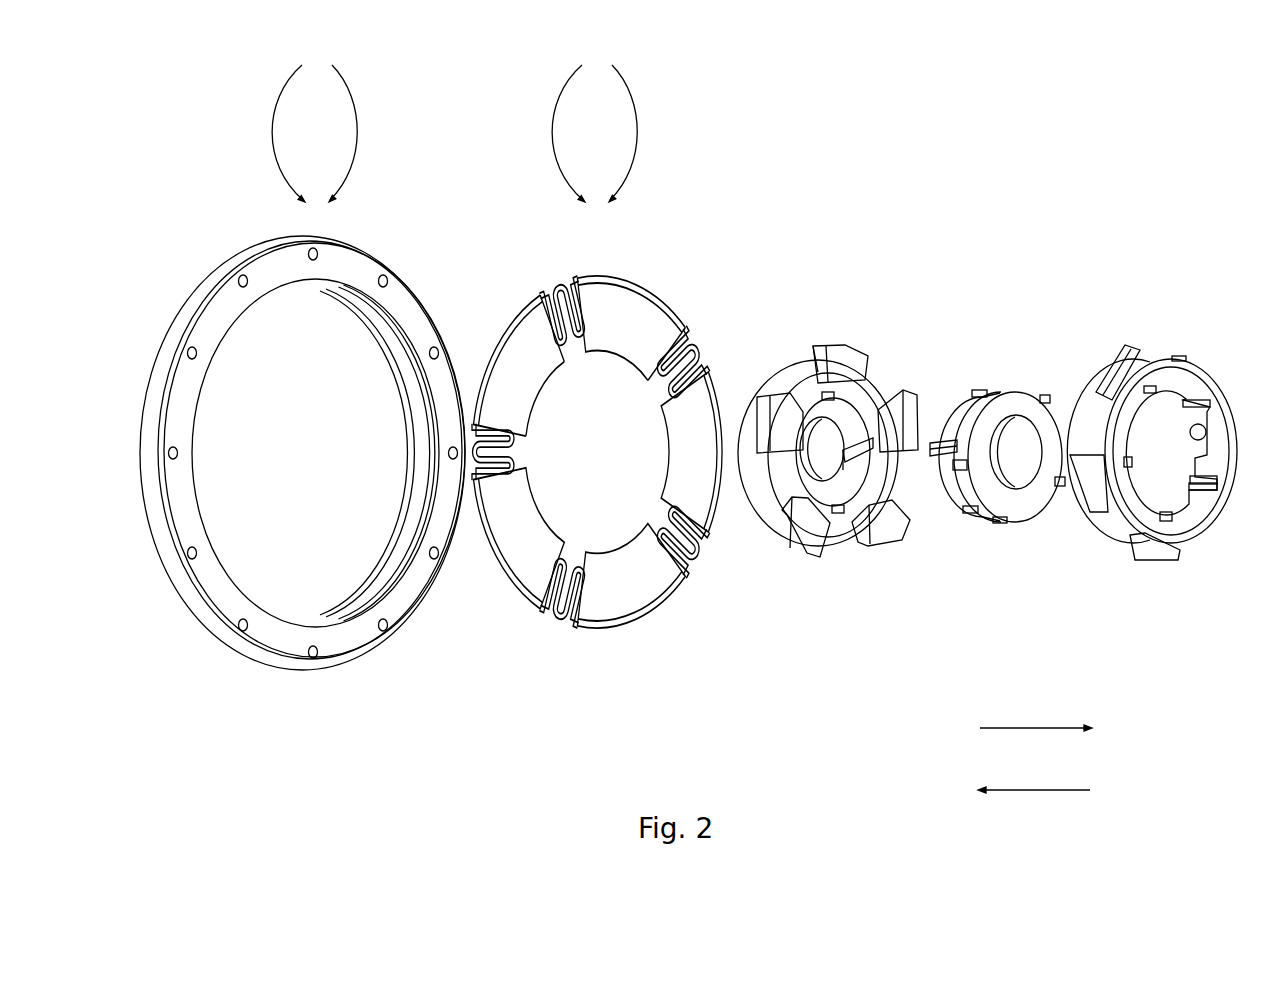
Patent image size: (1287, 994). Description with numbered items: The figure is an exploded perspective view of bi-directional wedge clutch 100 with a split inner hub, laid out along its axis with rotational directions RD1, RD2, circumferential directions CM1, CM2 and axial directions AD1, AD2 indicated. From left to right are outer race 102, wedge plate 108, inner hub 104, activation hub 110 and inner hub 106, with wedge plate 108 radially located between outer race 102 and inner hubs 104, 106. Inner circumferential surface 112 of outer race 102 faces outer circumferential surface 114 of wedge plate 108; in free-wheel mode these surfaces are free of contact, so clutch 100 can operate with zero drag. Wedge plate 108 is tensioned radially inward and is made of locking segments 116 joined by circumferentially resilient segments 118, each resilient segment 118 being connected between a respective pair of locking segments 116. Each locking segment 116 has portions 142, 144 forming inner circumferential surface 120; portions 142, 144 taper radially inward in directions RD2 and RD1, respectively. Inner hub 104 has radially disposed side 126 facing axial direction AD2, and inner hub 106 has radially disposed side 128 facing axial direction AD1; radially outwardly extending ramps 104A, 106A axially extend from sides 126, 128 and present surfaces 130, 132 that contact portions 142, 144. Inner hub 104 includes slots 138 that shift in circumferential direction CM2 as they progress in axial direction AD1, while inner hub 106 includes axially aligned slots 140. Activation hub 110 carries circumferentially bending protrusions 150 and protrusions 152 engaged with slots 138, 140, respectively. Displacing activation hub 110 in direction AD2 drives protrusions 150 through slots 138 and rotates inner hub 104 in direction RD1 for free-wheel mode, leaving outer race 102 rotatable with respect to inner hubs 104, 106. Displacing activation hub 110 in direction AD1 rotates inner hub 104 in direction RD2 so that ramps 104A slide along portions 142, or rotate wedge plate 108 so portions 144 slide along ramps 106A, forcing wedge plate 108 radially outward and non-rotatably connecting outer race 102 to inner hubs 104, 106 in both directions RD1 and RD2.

The bi-directional wedge clutch 100 is at (850, 80).
The outer race 102 is at (273, 684).
The inner hub 104 is at (837, 565).
The ramp 104A is at (841, 358).
The inner hub 106 is at (1178, 570).
The ramp 106A is at (1140, 362).
The wedge plate 108 is at (617, 462).
The activation hub 110 is at (997, 537).
The inner circumferential surface 112 is at (380, 323).
The outer circumferential surface 114 is at (597, 278).
The locking segment 116 is at (628, 325).
The resilient segment 118 is at (707, 371).
The inner circumferential surface 120 is at (543, 393).
The radially disposed side 126 is at (783, 476).
The radially disposed side 128 is at (1204, 437).
The surface 130 is at (798, 533).
The surface 132 is at (1107, 365).
The slot 138 is at (848, 465).
The axially aligned slot 140 is at (1208, 483).
The portion 142 is at (607, 351).
The portion 144 is at (648, 377).
The protrusion 150 is at (955, 444).
The protrusion 152 is at (1002, 523).
The rotational direction RD1 is at (272, 133).
The rotational direction RD2 is at (358, 133).
The circumferential direction CM1 is at (552, 136).
The circumferential direction CM2 is at (642, 125).
The axial direction AD1 is at (1033, 790).
The axial direction AD2 is at (1014, 728).